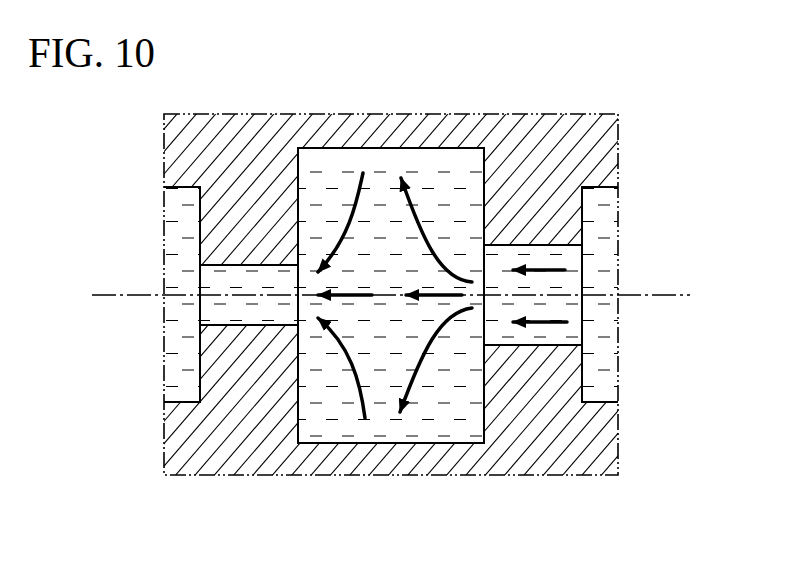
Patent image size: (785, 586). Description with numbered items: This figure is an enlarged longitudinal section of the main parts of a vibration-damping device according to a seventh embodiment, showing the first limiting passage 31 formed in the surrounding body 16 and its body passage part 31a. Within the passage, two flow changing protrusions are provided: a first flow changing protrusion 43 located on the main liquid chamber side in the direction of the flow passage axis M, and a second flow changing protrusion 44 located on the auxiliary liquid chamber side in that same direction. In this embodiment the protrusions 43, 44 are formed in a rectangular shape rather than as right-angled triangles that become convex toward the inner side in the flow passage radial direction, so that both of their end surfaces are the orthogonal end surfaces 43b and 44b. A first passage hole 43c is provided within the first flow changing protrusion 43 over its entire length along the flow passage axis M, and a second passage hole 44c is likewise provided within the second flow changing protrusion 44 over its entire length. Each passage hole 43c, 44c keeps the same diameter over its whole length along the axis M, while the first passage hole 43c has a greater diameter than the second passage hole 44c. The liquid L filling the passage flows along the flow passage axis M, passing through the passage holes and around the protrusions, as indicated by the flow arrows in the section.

The bearing housing block 16 is at (400, 481).
The first limiting passage 31 is at (582, 331).
The body passage part 31a is at (183, 400).
The first flow changing protrusion 43 is at (535, 212).
The orthogonal end surface 43b is at (485, 213).
The first passage hole 43c is at (500, 247).
The second flow changing protrusion 44 is at (243, 220).
The orthogonal end surface 44b is at (298, 226).
The second passage hole 44c is at (277, 267).
The lubricant L is at (605, 313).
The flow passage axis M is at (667, 295).